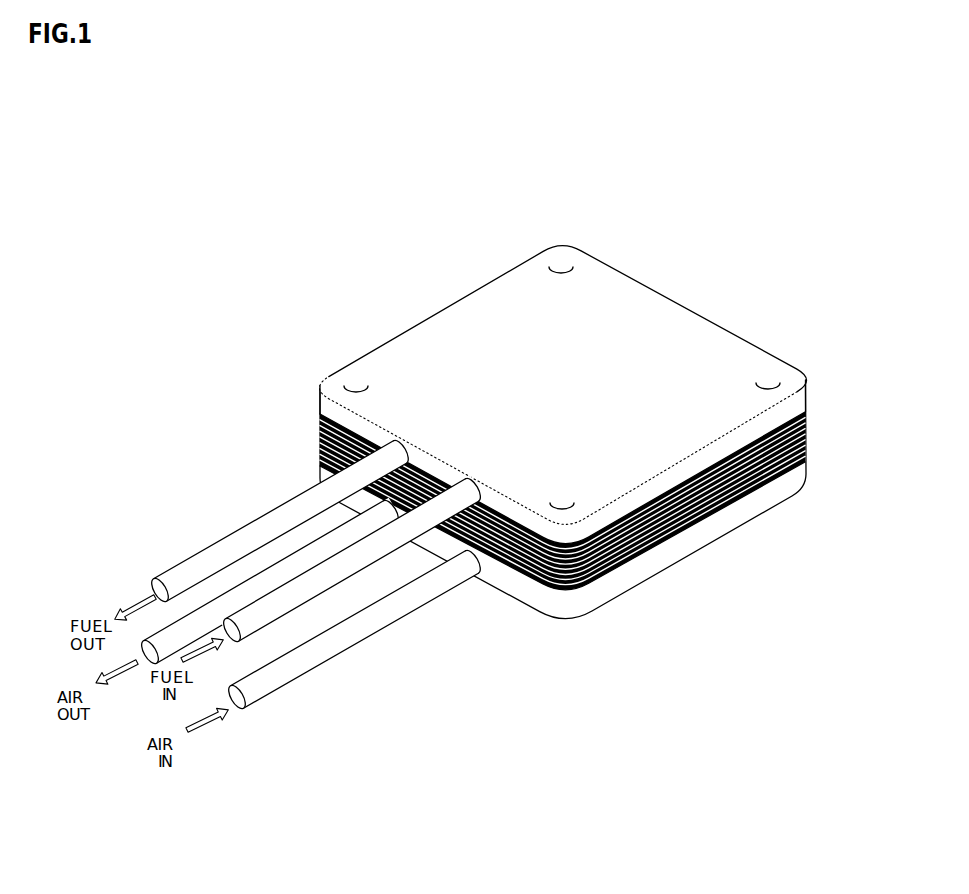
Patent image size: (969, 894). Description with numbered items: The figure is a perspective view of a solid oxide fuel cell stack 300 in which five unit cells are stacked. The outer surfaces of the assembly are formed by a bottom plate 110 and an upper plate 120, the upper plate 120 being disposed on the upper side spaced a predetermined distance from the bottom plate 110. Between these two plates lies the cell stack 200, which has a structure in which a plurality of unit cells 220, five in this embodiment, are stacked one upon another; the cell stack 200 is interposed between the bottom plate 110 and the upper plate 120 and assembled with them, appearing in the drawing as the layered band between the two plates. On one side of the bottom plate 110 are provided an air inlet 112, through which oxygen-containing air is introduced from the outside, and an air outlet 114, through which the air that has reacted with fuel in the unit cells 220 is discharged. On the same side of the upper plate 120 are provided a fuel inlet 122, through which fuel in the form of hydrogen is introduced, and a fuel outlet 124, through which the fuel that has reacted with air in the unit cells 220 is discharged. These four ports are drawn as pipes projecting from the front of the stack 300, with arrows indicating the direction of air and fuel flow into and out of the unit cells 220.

The bottom plate 110 is at (642, 570).
The air inlet 112 is at (308, 663).
The air outlet 114 is at (227, 607).
The upper plate 120 is at (408, 340).
The fuel inlet 122 is at (362, 555).
The fuel outlet 124 is at (260, 528).
The cell stack 200 is at (810, 410).
The unit cell 220 is at (805, 462).
The solid oxide fuel cell stack 300 is at (460, 204).